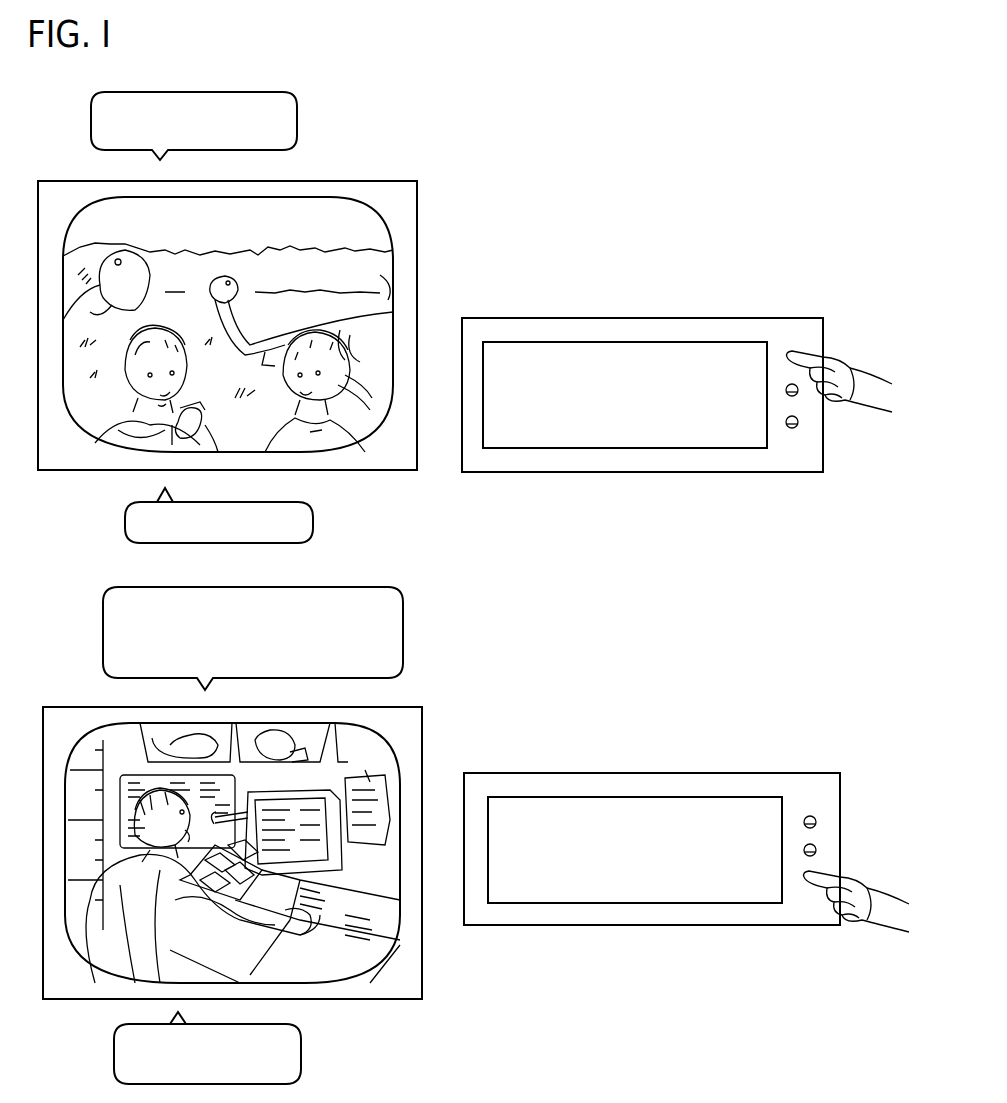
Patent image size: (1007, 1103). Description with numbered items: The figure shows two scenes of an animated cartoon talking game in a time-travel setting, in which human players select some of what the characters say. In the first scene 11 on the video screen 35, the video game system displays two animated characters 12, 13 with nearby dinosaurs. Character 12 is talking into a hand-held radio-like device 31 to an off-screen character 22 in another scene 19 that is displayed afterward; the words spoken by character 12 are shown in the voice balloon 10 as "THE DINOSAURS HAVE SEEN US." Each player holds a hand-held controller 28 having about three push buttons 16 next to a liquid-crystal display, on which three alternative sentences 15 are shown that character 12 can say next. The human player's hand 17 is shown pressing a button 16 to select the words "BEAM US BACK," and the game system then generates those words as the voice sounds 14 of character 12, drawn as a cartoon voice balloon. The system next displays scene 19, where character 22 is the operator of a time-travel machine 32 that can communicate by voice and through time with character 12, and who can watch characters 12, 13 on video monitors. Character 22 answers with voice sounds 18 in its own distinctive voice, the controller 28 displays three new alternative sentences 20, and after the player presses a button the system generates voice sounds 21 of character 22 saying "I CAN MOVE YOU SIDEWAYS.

The speech balloon (The dinosaurs have seen us) 10 is at (290, 115).
The first scene 11 is at (365, 235).
The video screen 35 is at (330, 222).
The animated character 12 is at (122, 440).
The hand-held radio-like device 31 is at (215, 435).
The animated character 13 is at (335, 442).
The voice sounds 14 is at (303, 525).
The hand-held controller 28 is at (560, 330).
The verbal expressions 15 is at (714, 360).
The push buttons 16 is at (800, 352).
The human player's hand 17 is at (872, 392).
The voice sounds 18 is at (390, 632).
The second scene 19 is at (365, 755).
The time-travel machine 32 is at (390, 898).
The animated character 22 is at (118, 968).
The voice sounds 21 is at (288, 1045).
The alternative sentences 20 is at (700, 810).